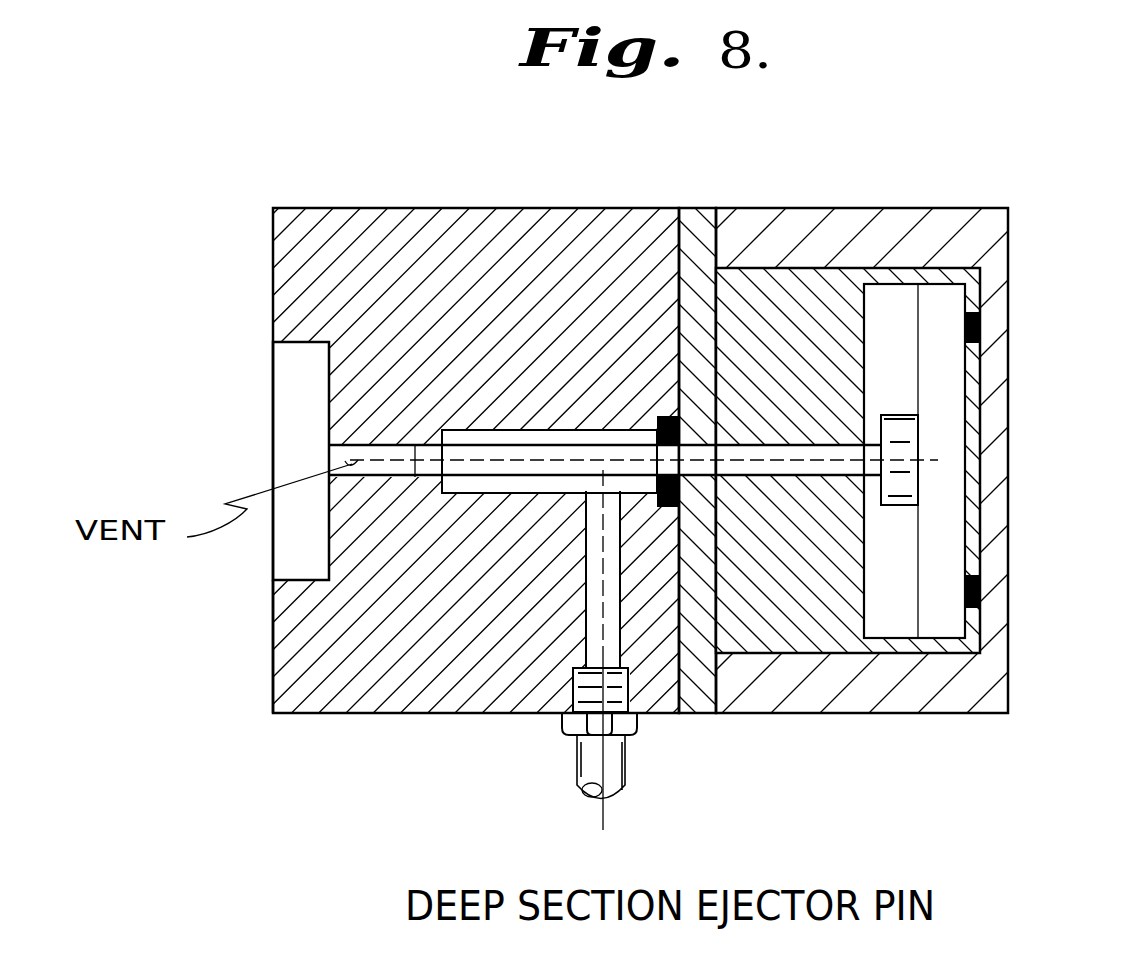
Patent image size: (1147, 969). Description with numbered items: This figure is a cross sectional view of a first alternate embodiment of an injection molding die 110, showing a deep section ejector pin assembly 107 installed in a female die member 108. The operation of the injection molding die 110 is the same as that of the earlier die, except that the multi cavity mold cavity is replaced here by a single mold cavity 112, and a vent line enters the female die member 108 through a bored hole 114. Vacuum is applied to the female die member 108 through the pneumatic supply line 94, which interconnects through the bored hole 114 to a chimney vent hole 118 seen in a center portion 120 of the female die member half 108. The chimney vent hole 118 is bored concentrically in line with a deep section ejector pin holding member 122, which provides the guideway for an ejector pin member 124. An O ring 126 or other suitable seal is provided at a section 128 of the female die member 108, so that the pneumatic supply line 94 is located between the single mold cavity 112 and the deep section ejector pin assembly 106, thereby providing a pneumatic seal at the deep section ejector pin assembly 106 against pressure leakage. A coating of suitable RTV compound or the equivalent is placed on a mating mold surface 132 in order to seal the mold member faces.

The pneumatic supply line 94 is at (628, 777).
The deep section ejector pin assembly 106 is at (889, 508).
The deep section ejector pin assembly 107 is at (770, 443).
The female die member 108 is at (272, 668).
The injection molding die 110 is at (783, 720).
The single mold cavity 112 is at (297, 465).
The bored hole 114 is at (585, 630).
The chimney vent hole 118 is at (497, 437).
The center portion 120 is at (540, 428).
The deep section ejector pin holding member 122 is at (897, 343).
The ejector pin member 124 is at (746, 443).
The O ring 126 is at (670, 416).
The section 128 is at (657, 416).
The mating mold surface 132 is at (272, 604).